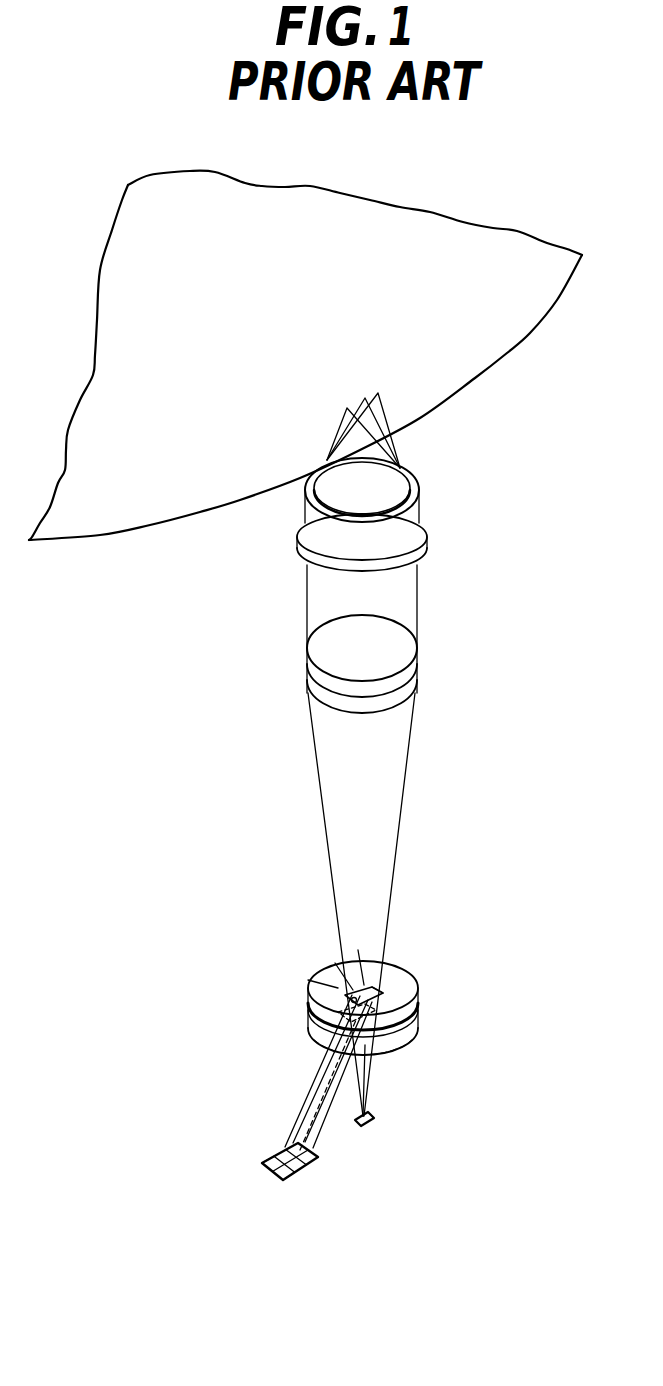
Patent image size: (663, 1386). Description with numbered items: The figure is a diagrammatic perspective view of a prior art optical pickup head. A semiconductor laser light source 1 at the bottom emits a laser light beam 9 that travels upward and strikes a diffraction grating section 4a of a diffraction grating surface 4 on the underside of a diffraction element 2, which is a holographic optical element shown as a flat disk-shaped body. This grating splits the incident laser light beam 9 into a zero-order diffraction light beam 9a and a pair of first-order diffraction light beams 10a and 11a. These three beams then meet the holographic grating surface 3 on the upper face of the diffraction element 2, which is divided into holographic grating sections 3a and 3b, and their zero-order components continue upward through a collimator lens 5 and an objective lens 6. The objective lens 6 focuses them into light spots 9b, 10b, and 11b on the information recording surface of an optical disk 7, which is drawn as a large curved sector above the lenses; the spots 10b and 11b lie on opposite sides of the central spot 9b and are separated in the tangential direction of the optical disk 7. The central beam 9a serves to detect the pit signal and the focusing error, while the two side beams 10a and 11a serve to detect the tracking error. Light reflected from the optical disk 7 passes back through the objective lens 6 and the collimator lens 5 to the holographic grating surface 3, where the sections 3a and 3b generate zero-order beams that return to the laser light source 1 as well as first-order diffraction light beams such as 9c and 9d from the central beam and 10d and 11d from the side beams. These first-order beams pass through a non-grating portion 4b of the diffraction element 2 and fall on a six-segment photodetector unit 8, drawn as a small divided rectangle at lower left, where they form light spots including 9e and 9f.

The semiconductor laser light source 1 is at (376, 1120).
The diffraction element 2 is at (417, 1010).
The holographic grating surface 3 is at (472, 912).
The holographic grating section 3a is at (392, 970).
The holographic grating section 3b is at (405, 978).
The diffraction grating surface 4 is at (487, 1035).
The diffraction grating section 4a is at (410, 1057).
The non-grating portion 4b is at (417, 1040).
The collimator lens 5 is at (418, 667).
The objective lens 6 is at (430, 522).
The optical disk 7 is at (217, 498).
The 6-segment photodetector unit 8 is at (307, 1163).
The laser light beam 9 is at (375, 1045).
The 0-order diffraction light beam 9a is at (335, 963).
The light spot 9b is at (365, 398).
The first-order diffraction light beam 9c is at (322, 1147).
The first-order diffraction light beam 9d is at (293, 1122).
The light spot 9e is at (303, 1173).
The light spot 9f is at (262, 1157).
The first-order diffraction light beam 10a is at (308, 980).
The light spot 10b is at (347, 408).
The first-order diffraction light beam 10d is at (322, 1125).
The first-order diffraction light beam 11a is at (358, 950).
The light spot 11b is at (378, 393).
The first-order diffraction light beam 11d is at (282, 1142).